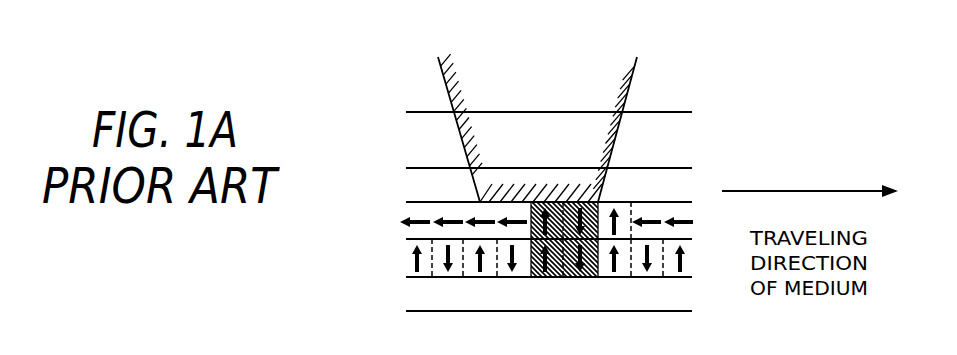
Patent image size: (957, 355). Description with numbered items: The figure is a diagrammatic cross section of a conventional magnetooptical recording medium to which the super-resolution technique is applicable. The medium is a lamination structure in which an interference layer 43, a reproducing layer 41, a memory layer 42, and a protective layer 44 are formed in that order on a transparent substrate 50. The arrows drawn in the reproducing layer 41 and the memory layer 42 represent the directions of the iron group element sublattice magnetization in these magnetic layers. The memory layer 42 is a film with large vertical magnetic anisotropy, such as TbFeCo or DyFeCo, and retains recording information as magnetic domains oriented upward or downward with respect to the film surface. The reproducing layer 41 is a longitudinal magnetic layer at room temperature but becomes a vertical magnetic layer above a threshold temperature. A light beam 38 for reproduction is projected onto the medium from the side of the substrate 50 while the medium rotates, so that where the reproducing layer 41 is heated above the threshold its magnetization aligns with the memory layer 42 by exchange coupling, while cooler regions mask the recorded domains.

The light beam 38 is at (595, 89).
The transparent substrate 50 is at (409, 146).
The interference layer 43 is at (411, 188).
The reproducing layer 41 is at (411, 216).
The memory layer 42 is at (411, 260).
The protective layer 44 is at (411, 293).